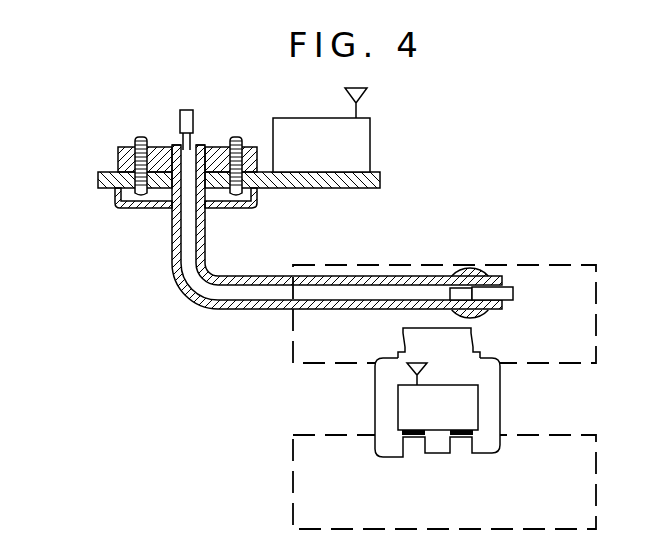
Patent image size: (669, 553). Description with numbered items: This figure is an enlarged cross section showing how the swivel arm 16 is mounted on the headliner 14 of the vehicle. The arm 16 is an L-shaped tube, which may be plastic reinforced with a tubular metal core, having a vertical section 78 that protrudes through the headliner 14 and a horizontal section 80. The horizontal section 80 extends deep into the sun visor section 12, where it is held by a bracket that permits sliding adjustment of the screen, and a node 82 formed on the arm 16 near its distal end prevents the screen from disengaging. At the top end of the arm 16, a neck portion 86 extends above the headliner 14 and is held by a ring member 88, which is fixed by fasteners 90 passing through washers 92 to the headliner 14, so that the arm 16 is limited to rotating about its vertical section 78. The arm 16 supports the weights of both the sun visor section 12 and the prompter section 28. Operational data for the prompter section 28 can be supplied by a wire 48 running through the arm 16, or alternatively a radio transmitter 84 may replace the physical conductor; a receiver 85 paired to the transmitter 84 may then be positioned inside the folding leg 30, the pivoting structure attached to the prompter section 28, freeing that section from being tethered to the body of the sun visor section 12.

The sun visor section 12 is at (293, 337).
The headliner 14 is at (380, 180).
The swivel arm 16 is at (295, 198).
The prompter section 28 is at (293, 478).
The folding leg 30 is at (375, 398).
The wire 48 is at (193, 118).
The vertical section 78 is at (206, 245).
The horizontal section 80 is at (330, 276).
The node 82 is at (470, 268).
The radio transmitter 84 is at (370, 128).
The receiver 85 is at (478, 403).
The neck portion 86 is at (207, 147).
The ring member 88 is at (160, 147).
The fasteners 90 is at (137, 139).
The washers 92 is at (118, 170).